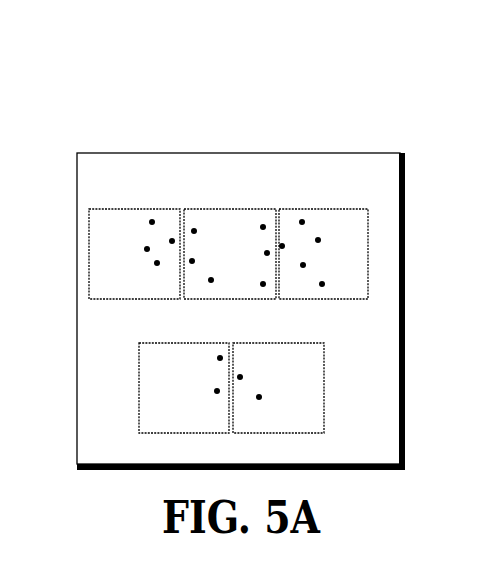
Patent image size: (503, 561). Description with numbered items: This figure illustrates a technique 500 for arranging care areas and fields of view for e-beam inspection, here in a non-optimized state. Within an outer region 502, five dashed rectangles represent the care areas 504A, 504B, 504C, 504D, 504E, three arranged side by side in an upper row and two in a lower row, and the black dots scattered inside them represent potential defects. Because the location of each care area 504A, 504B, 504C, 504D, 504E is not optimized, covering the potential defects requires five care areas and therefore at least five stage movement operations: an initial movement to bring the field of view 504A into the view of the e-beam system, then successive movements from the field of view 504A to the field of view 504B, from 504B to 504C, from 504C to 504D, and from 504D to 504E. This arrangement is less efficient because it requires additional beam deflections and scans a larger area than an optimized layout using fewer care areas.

The technique 500 is at (162, 73).
The substrate 502 is at (352, 152).
The care area 504A is at (135, 209).
The care area 504B is at (229, 210).
The care area 504C is at (367, 258).
The care area 504D is at (324, 396).
The care area 504E is at (138, 390).